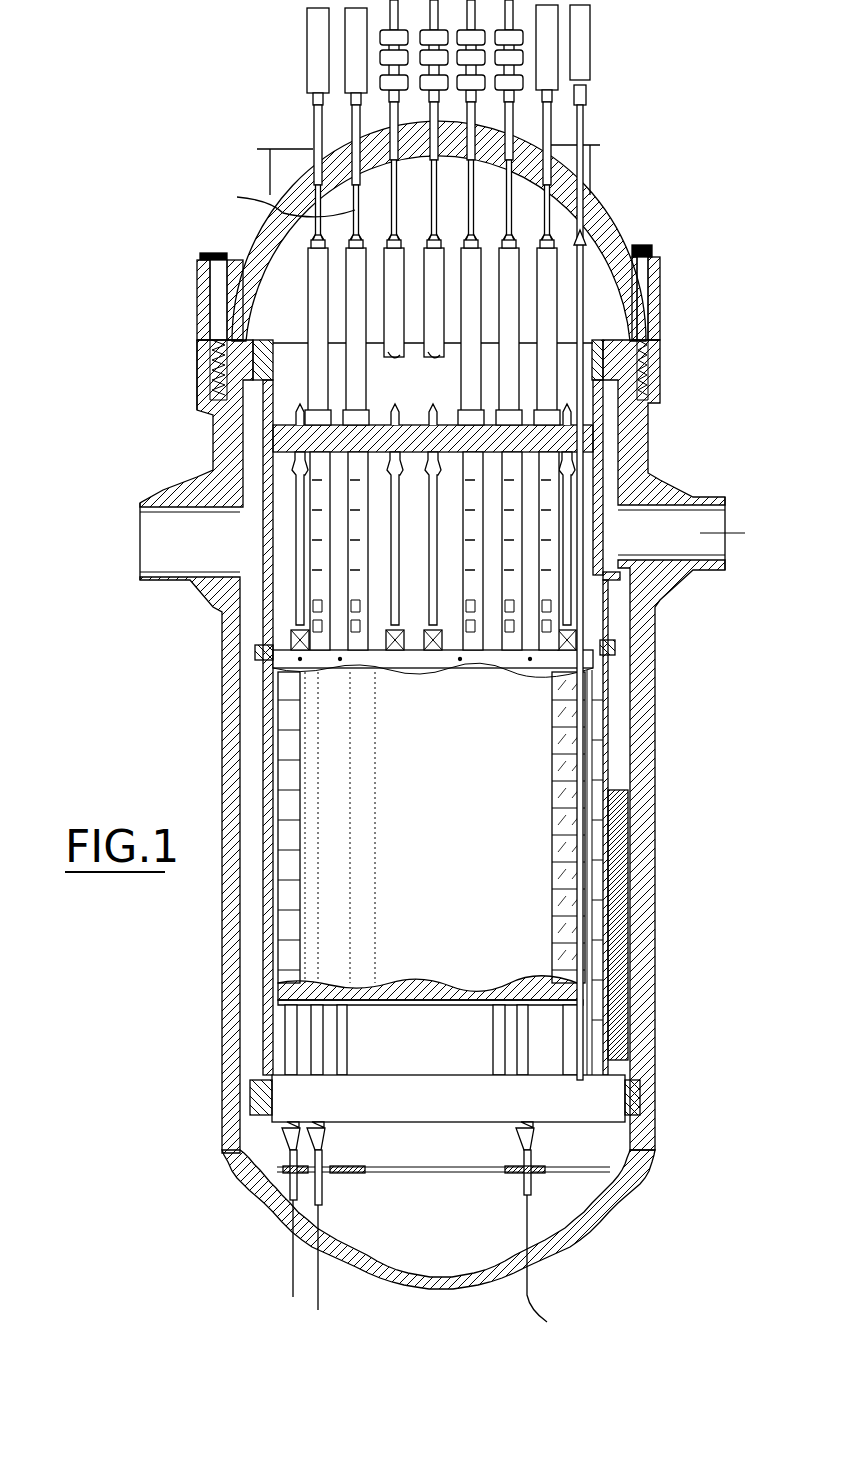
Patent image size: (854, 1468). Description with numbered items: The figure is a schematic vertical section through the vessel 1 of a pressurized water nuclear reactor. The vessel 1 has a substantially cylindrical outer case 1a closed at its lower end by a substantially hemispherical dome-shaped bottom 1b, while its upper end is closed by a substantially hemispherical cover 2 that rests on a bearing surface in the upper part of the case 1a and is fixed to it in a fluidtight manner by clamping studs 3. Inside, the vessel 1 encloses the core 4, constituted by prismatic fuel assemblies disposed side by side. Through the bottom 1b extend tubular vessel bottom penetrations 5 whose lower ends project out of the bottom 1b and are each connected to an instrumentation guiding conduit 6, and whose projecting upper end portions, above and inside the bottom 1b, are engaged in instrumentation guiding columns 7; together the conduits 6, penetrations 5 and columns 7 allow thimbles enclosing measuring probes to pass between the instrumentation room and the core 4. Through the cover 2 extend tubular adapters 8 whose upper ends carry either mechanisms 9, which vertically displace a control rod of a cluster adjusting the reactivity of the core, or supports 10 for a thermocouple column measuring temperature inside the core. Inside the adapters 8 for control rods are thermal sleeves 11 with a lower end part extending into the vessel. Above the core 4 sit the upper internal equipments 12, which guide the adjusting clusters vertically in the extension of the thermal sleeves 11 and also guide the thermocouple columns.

The vessel 1 is at (448, 814).
The case 1a is at (652, 870).
The dome-shaped bottom 1b is at (606, 1200).
The cover 2 is at (582, 222).
The clamping studs 3 is at (643, 300).
The core 4 is at (557, 790).
The vessel bottom penetrations 5 is at (290, 1236).
The instrumentation guiding conduit 6 is at (292, 1267).
The instrumentation guiding column 7 is at (288, 1135).
The tubular adapters 8 is at (549, 163).
The mechanisms 9 is at (516, 60).
The supports 10 is at (584, 68).
The thermal sleeves 11 is at (281, 200).
The upper internal equipments 12 is at (556, 380).